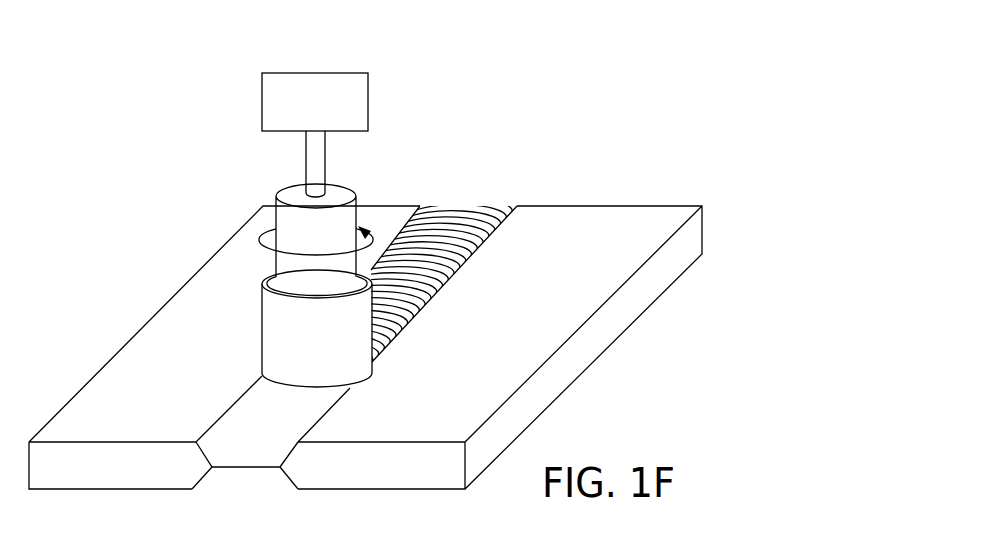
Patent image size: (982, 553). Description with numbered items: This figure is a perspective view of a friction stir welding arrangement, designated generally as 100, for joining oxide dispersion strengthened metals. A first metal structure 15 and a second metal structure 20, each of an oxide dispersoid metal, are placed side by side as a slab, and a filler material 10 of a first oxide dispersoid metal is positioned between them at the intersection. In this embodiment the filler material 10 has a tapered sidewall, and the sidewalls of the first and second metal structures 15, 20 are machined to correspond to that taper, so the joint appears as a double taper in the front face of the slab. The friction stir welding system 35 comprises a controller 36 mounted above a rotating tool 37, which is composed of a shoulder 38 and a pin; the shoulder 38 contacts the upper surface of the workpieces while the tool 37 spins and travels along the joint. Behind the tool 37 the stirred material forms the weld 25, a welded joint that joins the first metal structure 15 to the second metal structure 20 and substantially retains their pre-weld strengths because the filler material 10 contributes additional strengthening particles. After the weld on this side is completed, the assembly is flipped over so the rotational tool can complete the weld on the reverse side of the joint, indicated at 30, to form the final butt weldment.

The friction stir welding system 100 is at (365, 328).
The filler material 10 is at (247, 434).
The first metal structure 15 is at (189, 390).
The second metal structure 20 is at (469, 381).
The weld 25 is at (446, 226).
The weld root / joint bottom 30 is at (270, 483).
The friction stir welding system 35 is at (355, 153).
The controller 36 is at (328, 115).
The tool 37 is at (327, 245).
The shoulder 38 is at (327, 341).